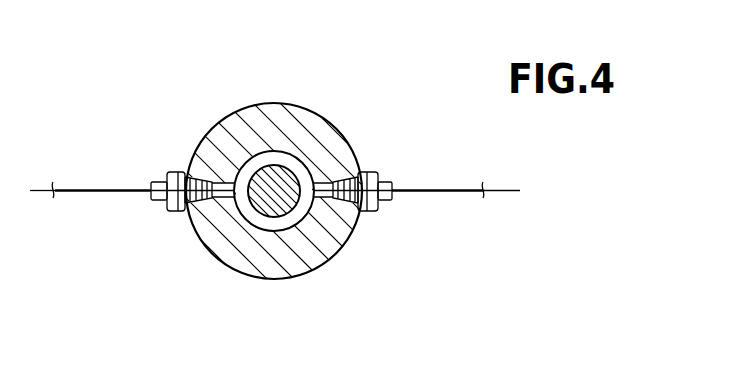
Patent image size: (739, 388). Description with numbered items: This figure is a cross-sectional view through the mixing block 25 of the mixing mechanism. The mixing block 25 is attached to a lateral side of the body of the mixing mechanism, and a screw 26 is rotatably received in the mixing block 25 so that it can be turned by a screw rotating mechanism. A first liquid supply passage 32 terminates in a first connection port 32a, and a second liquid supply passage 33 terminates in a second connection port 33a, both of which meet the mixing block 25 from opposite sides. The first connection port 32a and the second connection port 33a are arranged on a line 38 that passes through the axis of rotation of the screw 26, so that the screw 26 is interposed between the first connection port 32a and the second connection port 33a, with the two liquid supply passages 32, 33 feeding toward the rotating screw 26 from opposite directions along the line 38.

The mixing block 25 is at (269, 112).
The screw 26 is at (277, 208).
The first liquid supply passage 32 is at (101, 188).
The first connection port 32a is at (212, 180).
The second liquid supply passage 33 is at (432, 188).
The second connection port 33a is at (332, 180).
The line 38 is at (503, 193).